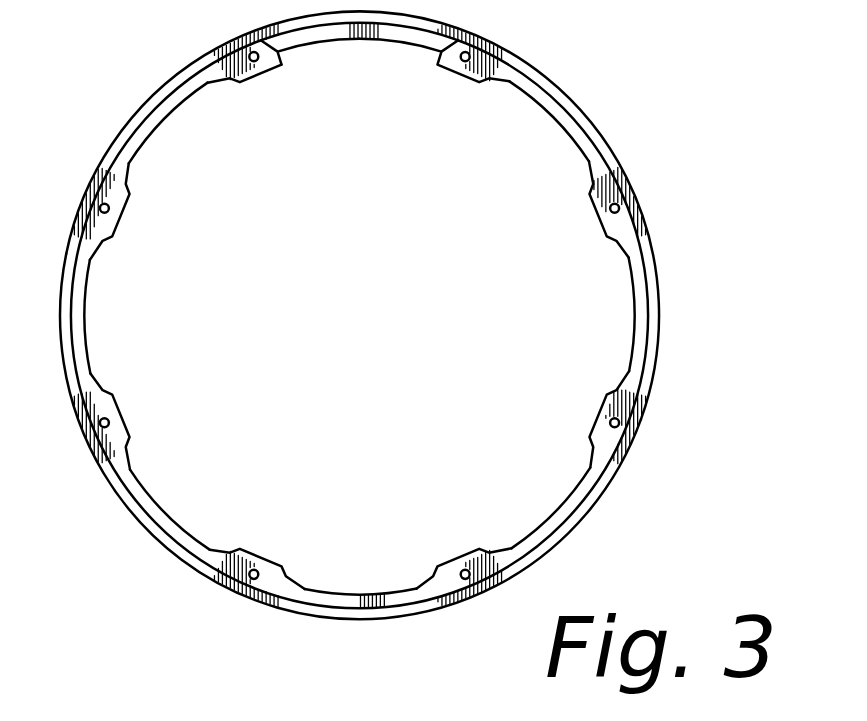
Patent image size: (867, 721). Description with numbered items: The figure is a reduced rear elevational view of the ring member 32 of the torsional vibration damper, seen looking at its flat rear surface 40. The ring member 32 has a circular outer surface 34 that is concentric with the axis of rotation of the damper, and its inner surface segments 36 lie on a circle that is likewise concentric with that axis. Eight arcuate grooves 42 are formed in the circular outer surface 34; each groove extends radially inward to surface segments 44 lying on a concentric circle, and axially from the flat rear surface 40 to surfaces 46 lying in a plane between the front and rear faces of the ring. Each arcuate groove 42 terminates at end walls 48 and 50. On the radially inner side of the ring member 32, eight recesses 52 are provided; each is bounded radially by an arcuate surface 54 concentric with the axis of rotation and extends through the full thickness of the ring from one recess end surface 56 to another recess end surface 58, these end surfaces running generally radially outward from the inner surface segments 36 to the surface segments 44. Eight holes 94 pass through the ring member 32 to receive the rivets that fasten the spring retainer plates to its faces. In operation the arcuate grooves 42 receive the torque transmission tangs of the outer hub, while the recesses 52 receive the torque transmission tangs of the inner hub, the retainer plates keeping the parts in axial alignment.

The ring member 32 is at (393, 328).
The circular outer surface 34 is at (374, 437).
The inner surface segments 36 is at (581, 419).
The flat rear surface 40 is at (230, 597).
The arcuate grooves 42 is at (404, 215).
The surface segments 44 is at (142, 122).
The surfaces 46 is at (406, 316).
The end wall 48 is at (84, 201).
The end wall 50 is at (206, 51).
The recesses 52 is at (530, 494).
The arcuate surfaces 54 is at (361, 565).
The recess end surface 56 is at (310, 88).
The recess end surface 58 is at (435, 75).
The holes 94 is at (140, 422).